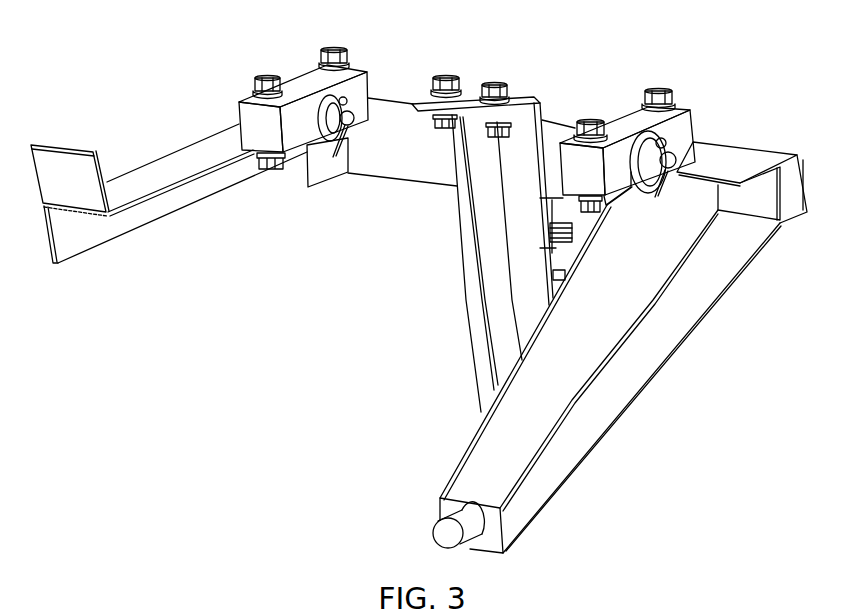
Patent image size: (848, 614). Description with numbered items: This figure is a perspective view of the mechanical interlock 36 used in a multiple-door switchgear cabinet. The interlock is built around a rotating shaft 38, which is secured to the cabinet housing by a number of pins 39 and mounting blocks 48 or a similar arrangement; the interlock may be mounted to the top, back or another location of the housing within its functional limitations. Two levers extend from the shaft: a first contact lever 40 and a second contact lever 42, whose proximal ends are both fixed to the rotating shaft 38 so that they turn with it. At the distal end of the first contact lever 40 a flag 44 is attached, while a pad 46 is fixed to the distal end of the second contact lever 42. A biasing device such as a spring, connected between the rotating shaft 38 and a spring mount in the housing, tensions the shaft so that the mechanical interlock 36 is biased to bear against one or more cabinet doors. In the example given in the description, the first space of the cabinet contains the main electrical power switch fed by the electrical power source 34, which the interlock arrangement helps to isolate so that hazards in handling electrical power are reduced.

The electrical power source 34 is at (557, 248).
The mechanical interlock 36 is at (537, 30).
The rotating shaft 38 is at (753, 160).
The pins 39 is at (355, 113).
The first contact lever 40 is at (183, 160).
The second contact lever 42 is at (615, 395).
The flag 44 is at (58, 172).
The pad 46 is at (445, 540).
The mounting blocks 48 is at (300, 80).